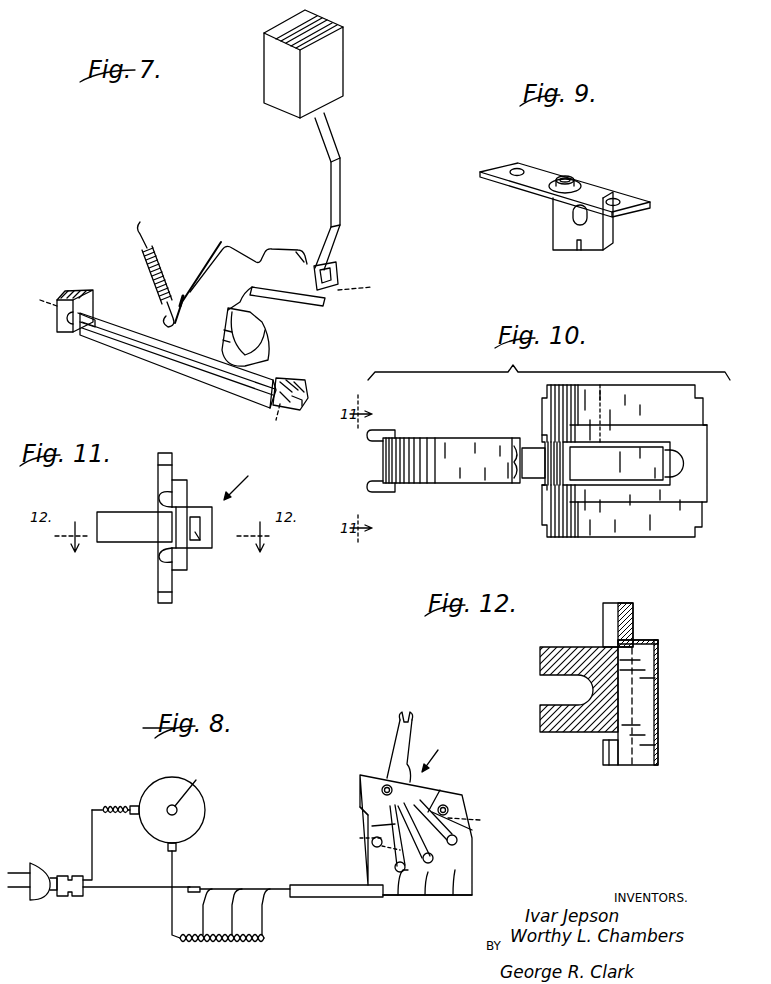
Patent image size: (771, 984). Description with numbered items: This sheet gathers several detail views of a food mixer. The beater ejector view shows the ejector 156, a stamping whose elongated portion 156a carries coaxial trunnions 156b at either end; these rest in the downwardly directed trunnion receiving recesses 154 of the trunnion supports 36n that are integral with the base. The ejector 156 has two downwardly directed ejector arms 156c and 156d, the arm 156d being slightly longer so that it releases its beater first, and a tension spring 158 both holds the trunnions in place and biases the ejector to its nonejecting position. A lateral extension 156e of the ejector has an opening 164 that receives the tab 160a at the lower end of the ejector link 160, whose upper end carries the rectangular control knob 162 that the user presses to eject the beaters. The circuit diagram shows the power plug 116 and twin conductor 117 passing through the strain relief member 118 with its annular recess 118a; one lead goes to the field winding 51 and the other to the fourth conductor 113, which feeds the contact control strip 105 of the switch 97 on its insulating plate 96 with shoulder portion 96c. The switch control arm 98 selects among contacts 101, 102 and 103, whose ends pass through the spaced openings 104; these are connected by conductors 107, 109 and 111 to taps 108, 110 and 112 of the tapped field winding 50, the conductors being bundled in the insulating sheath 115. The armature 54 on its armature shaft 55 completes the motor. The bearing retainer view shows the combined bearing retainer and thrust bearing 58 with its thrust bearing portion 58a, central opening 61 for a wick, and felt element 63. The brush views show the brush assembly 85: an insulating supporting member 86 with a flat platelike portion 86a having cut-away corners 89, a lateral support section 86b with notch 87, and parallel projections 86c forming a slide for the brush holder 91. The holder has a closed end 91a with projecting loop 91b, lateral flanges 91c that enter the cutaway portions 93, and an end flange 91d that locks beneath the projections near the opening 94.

In FIG. 7, the trunnion supports 36n is at (70, 292).
In FIG. 8, the field winding 50 is at (218, 944).
In FIG. 8, the field winding 51 is at (110, 806).
In FIG. 8, the armature 54 is at (205, 806).
In FIG. 8, the armature shaft 55 is at (198, 780).
In FIG. 9, the combined bearing retainer and thrust bearing 58 is at (614, 184).
In FIG. 9, the thrust bearing portion 58a is at (612, 226).
In FIG. 9, the opening 61 is at (566, 178).
In FIG. 9, the felt element 63 is at (592, 232).
In FIG. 11, the brush assembly 85 is at (236, 475).
In FIG. 10, the supporting member 86 is at (630, 528).
In FIG. 11, the supporting member 86 is at (160, 578).
In FIG. 12, the supporting member 86 is at (566, 725).
In FIG. 10, the flat platelike portion 86a is at (640, 392).
In FIG. 11, the flat platelike portion 86a is at (176, 472).
In FIG. 10, the lateral support section 86b is at (535, 490).
In FIG. 11, the lateral support section 86b is at (118, 540).
In FIG. 12, the lateral support section 86b is at (560, 647).
In FIG. 10, the parallel projections 86c is at (648, 422).
In FIG. 11, the parallel projections 86c is at (187, 497).
In FIG. 12, the notch 87 is at (548, 680).
In FIG. 10, the cut-away corners 89 is at (552, 384).
In FIG. 11, the cut-away corners 89 is at (163, 452).
In FIG. 10, the brush holder 91 is at (442, 442).
In FIG. 11, the brush holder 91 is at (213, 510).
In FIG. 12, the brush holder 91 is at (660, 690).
In FIG. 11, the closed end 91a is at (206, 524).
In FIG. 12, the closed end 91a is at (645, 642).
In FIG. 10, the projecting loop 91b is at (514, 444).
In FIG. 11, the projecting loop 91b is at (200, 540).
In FIG. 10, the lateral flanges 91c is at (386, 431).
In FIG. 11, the lateral flanges 91c is at (160, 554).
In FIG. 12, the lateral flanges 91c is at (606, 755).
In FIG. 10, the end flange 91d is at (512, 480).
In FIG. 12, the end flange 91d is at (610, 614).
In FIG. 10, the cutaway portions 93 is at (540, 432).
In FIG. 10, the opening 94 is at (683, 463).
In FIG. 8, the insulating plate 96 is at (362, 776).
In FIG. 8, the shoulder portion 96c is at (360, 810).
In FIG. 8, the switch 97 is at (436, 752).
In FIG. 8, the switch control arm 98 is at (400, 740).
In FIG. 8, the switch contact 101 is at (450, 803).
In FIG. 8, the switch contact 102 is at (412, 815).
In FIG. 8, the switch contact 103 is at (368, 826).
In FIG. 8, the spaced openings 104 is at (379, 797).
In FIG. 8, the contact control strip 105 is at (473, 816).
In FIG. 8, the conductor 107 is at (270, 886).
In FIG. 8, the tap 108 is at (264, 937).
In FIG. 8, the conductor 109 is at (240, 886).
In FIG. 8, the tap 110 is at (232, 935).
In FIG. 8, the conductor 111 is at (210, 885).
In FIG. 8, the tap 112 is at (200, 924).
In FIG. 8, the fourth conductor 113 is at (192, 886).
In FIG. 8, the insulating sheath 115 is at (336, 897).
In FIG. 8, the power plug 116 is at (36, 864).
In FIG. 8, the twin conductor 117 is at (56, 876).
In FIG. 8, the strain relief member 118 is at (60, 896).
In FIG. 8, the annular recess 118a is at (70, 898).
In FIG. 7, the trunnion receiving recesses 154 is at (92, 322).
In FIG. 7, the ejector 156 is at (222, 252).
In FIG. 7, the elongated portion 156a is at (190, 372).
In FIG. 7, the trunnions 156b is at (155, 358).
In FIG. 7, the ejector arm 156c is at (262, 348).
In FIG. 7, the ejector arm 156d is at (188, 272).
In FIG. 7, the lateral extension 156e is at (300, 262).
In FIG. 7, the tension spring 158 is at (150, 262).
In FIG. 7, the ejector link 160 is at (334, 135).
In FIG. 7, the tab 160a is at (345, 276).
In FIG. 7, the control knob 162 is at (326, 52).
In FIG. 7, the opening 164 is at (310, 280).